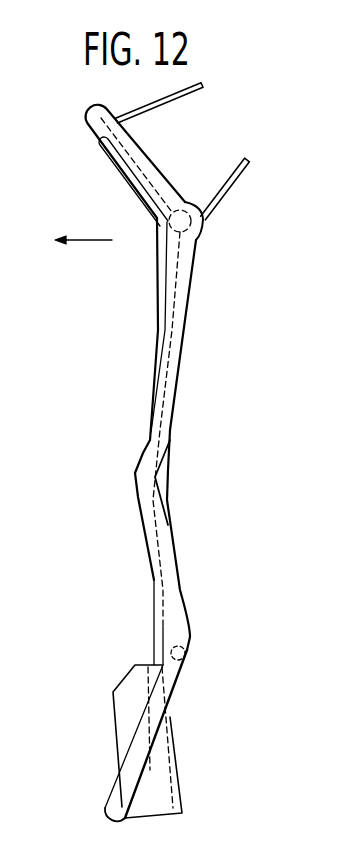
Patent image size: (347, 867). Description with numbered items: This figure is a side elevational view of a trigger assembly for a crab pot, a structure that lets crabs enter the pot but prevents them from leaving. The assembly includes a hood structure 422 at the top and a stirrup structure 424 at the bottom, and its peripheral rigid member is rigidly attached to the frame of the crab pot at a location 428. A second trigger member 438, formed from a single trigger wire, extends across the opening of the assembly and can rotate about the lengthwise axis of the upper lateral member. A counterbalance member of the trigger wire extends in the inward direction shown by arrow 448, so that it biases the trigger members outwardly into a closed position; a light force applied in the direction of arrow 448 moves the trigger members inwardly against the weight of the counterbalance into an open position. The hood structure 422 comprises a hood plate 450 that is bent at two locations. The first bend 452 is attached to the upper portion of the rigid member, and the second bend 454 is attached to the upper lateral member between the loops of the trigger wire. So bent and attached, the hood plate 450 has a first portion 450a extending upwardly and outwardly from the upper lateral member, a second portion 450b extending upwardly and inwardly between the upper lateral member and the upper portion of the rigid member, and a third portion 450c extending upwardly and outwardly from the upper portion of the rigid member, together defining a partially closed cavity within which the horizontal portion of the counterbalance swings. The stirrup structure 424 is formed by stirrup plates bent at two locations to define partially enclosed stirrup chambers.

The hood structure 422 is at (226, 125).
The stirrup structure 424 is at (189, 742).
The location 428 is at (176, 480).
The second trigger member 438 is at (153, 628).
The arrow 448 is at (112, 240).
The hood plate 450 is at (228, 191).
The first portion 450a is at (240, 177).
The second portion 450b is at (122, 180).
The third portion 450c is at (184, 99).
The first bend 452 is at (92, 141).
The second bend 454 is at (202, 153).